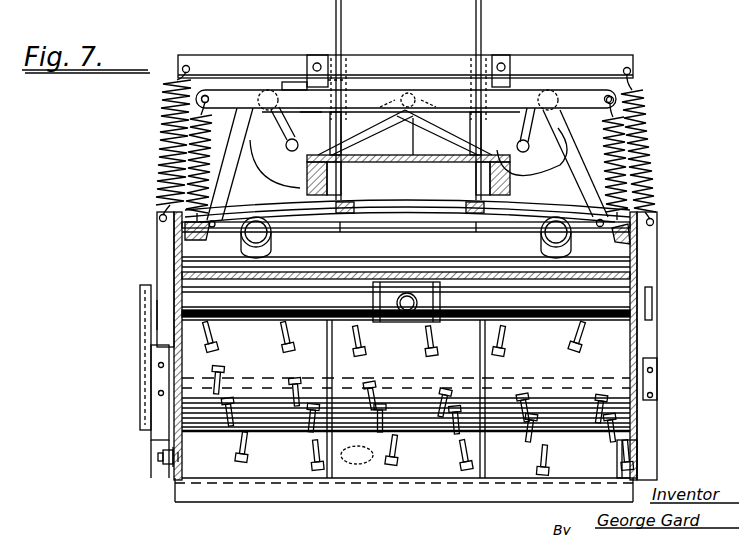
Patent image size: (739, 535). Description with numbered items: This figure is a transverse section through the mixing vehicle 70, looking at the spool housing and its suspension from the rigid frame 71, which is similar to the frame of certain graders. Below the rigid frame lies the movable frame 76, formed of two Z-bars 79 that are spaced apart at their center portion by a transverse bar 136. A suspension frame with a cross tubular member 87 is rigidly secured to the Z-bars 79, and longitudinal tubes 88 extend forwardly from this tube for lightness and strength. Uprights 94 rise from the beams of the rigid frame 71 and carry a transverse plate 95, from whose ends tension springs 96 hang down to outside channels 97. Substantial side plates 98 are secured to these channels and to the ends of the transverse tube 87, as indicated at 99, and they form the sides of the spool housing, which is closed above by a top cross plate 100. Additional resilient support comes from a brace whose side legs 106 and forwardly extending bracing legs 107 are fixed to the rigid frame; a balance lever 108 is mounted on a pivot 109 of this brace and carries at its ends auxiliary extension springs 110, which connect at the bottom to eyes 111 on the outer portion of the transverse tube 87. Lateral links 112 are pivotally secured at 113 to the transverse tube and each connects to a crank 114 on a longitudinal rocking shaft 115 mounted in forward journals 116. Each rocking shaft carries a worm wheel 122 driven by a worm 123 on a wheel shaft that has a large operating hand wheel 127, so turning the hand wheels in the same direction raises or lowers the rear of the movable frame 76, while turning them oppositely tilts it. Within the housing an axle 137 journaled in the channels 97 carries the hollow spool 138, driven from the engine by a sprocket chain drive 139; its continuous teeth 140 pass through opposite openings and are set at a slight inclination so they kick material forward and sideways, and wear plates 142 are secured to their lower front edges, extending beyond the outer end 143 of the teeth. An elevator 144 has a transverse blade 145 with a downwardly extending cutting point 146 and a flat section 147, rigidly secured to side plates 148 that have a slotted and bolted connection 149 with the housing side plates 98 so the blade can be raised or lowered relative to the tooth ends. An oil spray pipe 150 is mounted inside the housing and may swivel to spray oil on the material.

The vehicle 70 is at (676, 178).
The rigid frame 71 is at (492, 180).
The movable frame 76 is at (335, 233).
The Z-bars 79 is at (349, 213).
The cross tubular member 87 is at (500, 257).
The longitudinal tubes 88 is at (268, 218).
The uprights 94 is at (313, 130).
The transverse plate 95 is at (256, 64).
The tension springs 96 is at (170, 133).
The outside channels 97 is at (165, 267).
The side plates 98 is at (168, 344).
The securing point 99 is at (174, 238).
The top cross plate 100 is at (516, 273).
The side legs 106 is at (458, 152).
The forwardly extending bracing legs 107 is at (405, 140).
The balance lever 108 is at (470, 108).
The pivot 109 is at (408, 93).
The auxiliary extension springs 110 is at (645, 143).
The eyes 111 is at (622, 240).
The lateral links 112 is at (573, 147).
The pivotal connection 113 is at (600, 228).
The crank 114 is at (538, 149).
The rocking shafts 115 is at (532, 153).
The forward journals 116 is at (520, 125).
The worm wheel 122 is at (262, 150).
The worm 123 is at (294, 84).
The operating hand wheel 127 is at (345, 40).
The transverse bar 136 is at (391, 203).
The axle 137 is at (657, 386).
The spool 138 is at (418, 378).
The sprocket chain drive 139 is at (142, 333).
The teeth 140 is at (405, 455).
The wear plates 142 is at (362, 345).
The outer end of the teeth 143 is at (358, 360).
The elevator 144 is at (398, 501).
The transverse blade 145 is at (180, 492).
The cutting point 146 is at (227, 497).
The flat section 147 is at (348, 482).
The side plates 148 is at (163, 455).
The slotted and bolted connection 149 is at (166, 462).
The oil spray pipe 150 is at (170, 312).